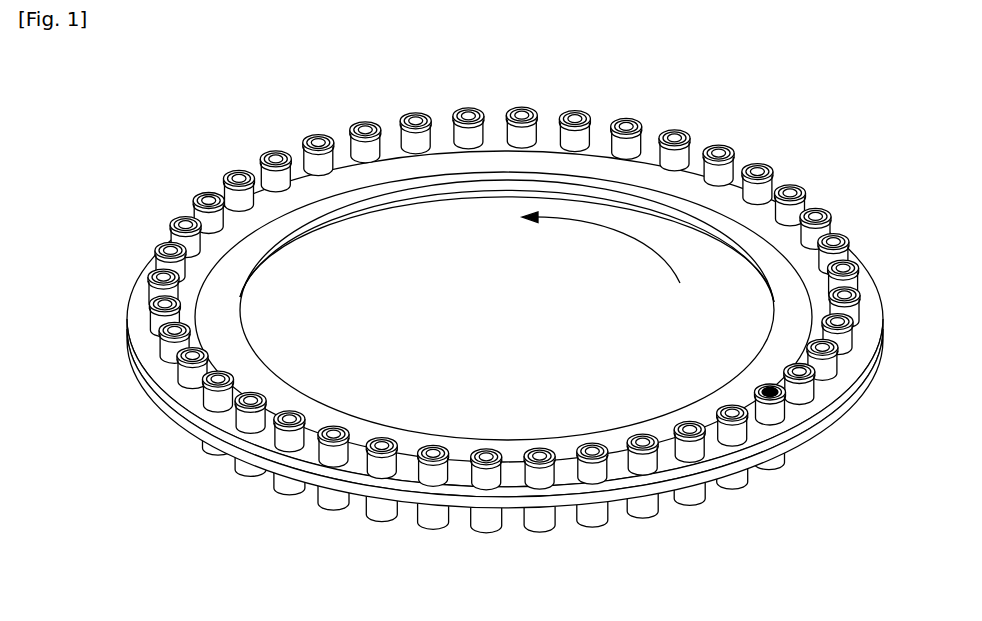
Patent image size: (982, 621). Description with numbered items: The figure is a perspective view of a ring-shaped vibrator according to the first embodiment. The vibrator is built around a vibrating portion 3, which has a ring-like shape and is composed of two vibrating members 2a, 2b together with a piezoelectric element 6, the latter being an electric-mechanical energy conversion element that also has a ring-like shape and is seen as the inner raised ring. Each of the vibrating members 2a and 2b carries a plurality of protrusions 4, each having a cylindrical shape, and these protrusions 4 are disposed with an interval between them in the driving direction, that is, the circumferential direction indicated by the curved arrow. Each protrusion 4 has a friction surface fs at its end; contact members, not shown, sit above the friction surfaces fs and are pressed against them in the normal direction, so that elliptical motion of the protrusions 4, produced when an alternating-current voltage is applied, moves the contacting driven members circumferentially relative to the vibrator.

The vibrating member 2a is at (183, 398).
The vibrating member 2b is at (228, 453).
The vibrating portion 3 is at (475, 345).
The protrusion 4 is at (779, 415).
The piezoelectric element 6 is at (245, 243).
The friction surface fs is at (763, 388).